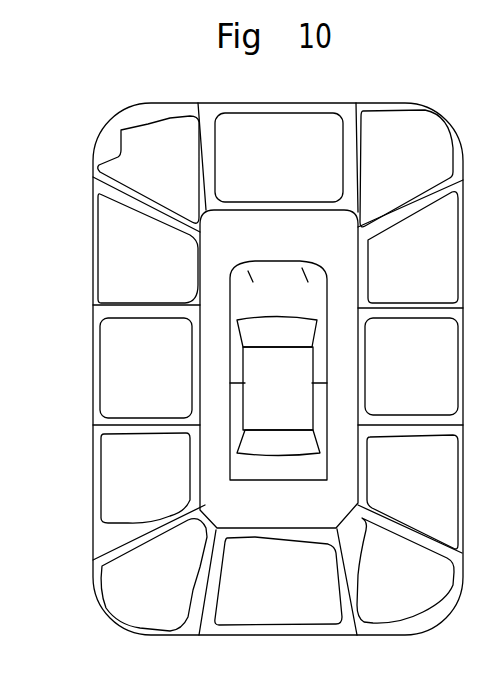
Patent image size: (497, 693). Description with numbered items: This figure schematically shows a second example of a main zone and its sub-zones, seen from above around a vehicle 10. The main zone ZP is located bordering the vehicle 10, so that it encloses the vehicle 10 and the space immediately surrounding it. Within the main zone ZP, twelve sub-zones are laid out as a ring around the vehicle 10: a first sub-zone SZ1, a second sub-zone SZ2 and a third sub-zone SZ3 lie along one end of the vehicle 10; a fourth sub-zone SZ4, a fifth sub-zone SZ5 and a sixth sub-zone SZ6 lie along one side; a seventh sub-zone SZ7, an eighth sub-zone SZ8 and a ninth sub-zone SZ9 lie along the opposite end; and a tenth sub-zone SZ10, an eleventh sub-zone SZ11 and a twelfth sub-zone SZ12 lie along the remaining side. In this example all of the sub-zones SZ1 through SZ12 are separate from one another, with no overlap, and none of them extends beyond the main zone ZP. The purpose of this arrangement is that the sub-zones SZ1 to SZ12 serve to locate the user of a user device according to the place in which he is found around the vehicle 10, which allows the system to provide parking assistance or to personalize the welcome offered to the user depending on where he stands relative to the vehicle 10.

The vehicle 10 is at (230, 481).
The main zone ZP is at (93, 222).
The first sub-zone SZ1 is at (148, 169).
The second sub-zone SZ2 is at (279, 157).
The third sub-zone SZ3 is at (406, 168).
The fourth sub-zone SZ4 is at (413, 247).
The fifth sub-zone SZ5 is at (411, 366).
The sixth sub-zone SZ6 is at (412, 492).
The seventh sub-zone SZ7 is at (405, 570).
The eighth sub-zone SZ8 is at (278, 581).
The ninth sub-zone SZ9 is at (154, 575).
The tenth sub-zone SZ10 is at (145, 478).
The eleventh sub-zone SZ11 is at (146, 368).
The twelfth sub-zone SZ12 is at (148, 248).